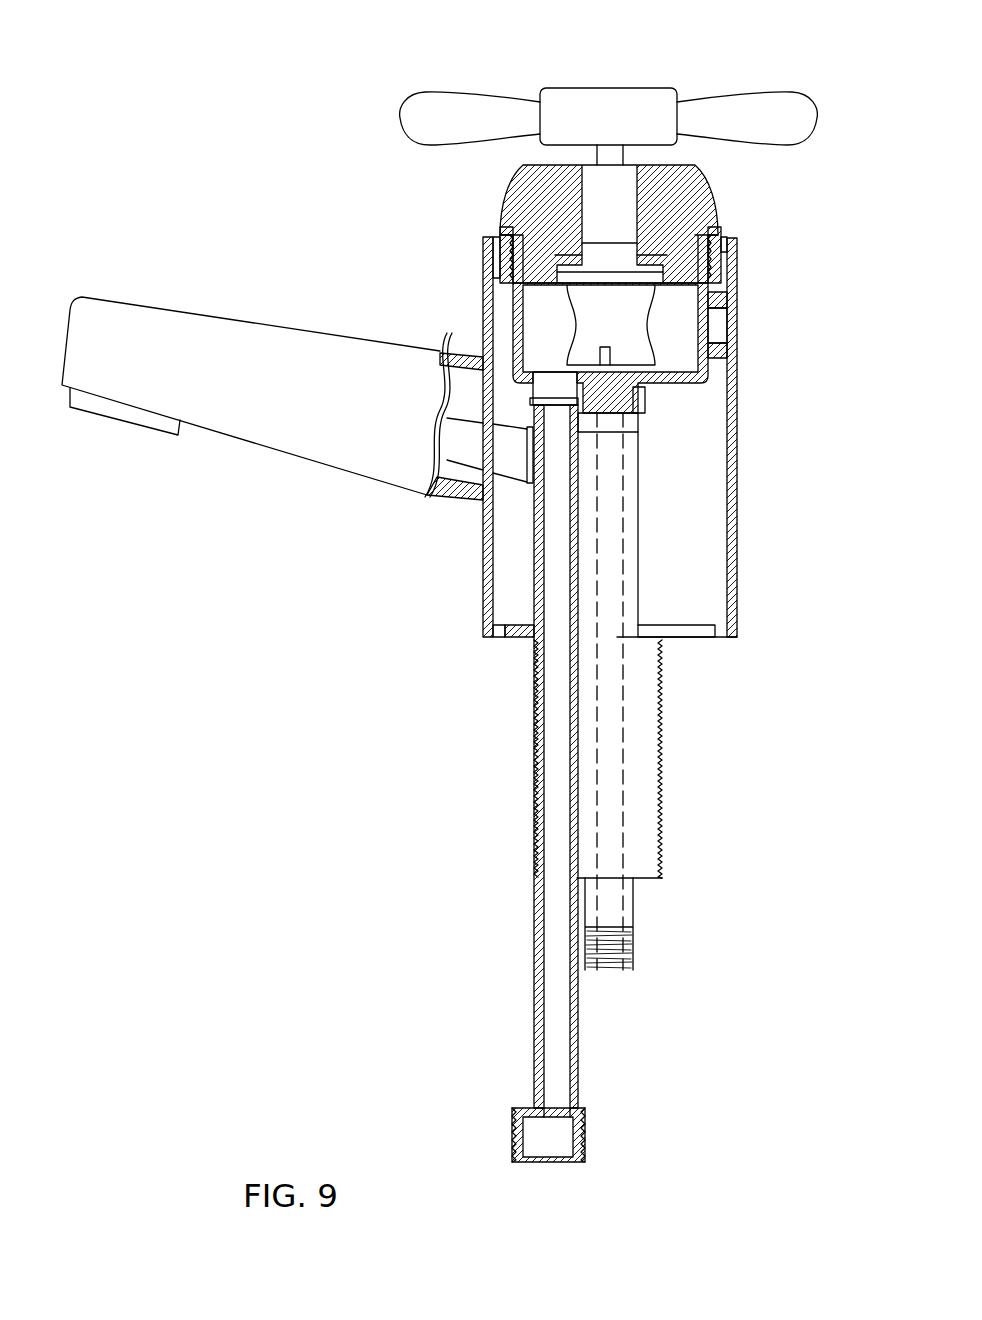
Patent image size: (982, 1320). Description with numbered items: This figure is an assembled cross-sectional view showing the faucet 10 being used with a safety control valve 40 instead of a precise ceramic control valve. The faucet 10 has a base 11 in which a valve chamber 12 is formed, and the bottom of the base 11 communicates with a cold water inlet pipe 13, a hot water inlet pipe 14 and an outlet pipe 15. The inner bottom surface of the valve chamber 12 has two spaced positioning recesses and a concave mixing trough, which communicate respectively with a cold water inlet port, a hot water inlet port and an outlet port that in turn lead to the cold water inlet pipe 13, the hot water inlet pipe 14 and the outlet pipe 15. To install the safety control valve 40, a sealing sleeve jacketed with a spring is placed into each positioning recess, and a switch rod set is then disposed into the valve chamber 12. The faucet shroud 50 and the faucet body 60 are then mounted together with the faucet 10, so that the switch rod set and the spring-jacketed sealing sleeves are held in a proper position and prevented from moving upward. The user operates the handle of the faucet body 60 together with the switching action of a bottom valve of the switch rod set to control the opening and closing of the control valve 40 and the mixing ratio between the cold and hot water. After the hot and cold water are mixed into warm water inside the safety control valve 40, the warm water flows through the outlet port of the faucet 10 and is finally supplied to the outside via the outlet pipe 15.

The faucet 10 is at (703, 388).
The base 11 is at (483, 303).
The valve chamber 12 is at (498, 247).
The cold water inlet pipe 13 is at (717, 691).
The hot water inlet pipe 14 is at (630, 895).
The outlet pipe 15 is at (558, 825).
The safety control valve 40 is at (657, 272).
The faucet shroud 50 is at (531, 160).
The faucet body 60 is at (476, 538).